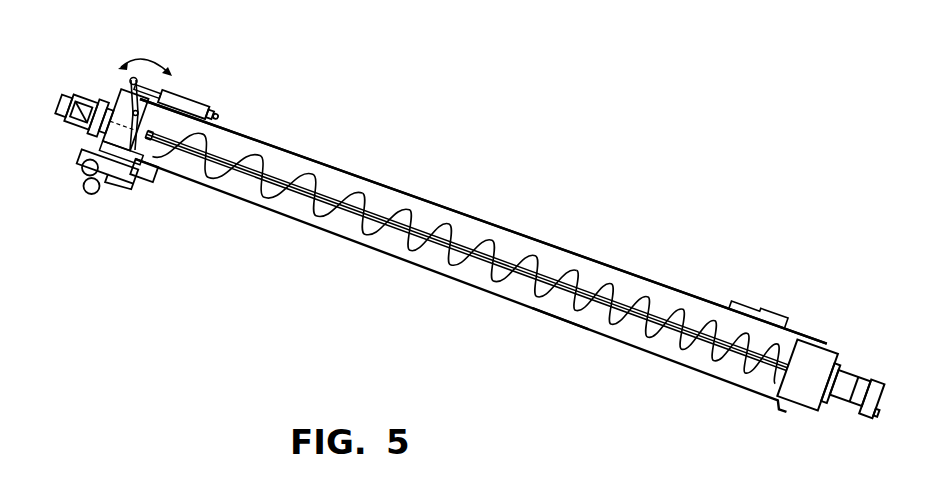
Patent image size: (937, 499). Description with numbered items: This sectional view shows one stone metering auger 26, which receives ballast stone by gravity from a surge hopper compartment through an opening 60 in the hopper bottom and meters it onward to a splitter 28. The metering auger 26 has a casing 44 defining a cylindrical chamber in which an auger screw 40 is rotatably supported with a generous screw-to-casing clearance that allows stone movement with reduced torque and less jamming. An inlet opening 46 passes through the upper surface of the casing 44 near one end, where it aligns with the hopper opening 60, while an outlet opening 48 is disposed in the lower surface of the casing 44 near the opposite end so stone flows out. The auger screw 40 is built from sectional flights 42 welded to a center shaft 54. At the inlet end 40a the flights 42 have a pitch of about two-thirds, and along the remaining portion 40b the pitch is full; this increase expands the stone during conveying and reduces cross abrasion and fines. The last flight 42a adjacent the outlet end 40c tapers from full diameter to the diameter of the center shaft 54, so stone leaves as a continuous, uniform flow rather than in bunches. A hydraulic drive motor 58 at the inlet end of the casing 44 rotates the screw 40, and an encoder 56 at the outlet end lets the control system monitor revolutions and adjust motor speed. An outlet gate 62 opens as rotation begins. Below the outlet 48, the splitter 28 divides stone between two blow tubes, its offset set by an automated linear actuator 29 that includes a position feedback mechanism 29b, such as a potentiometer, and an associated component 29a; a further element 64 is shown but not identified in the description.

The metering auger 26 is at (499, 200).
The splitter 28 is at (106, 187).
The automated linear actuator 29 is at (60, 213).
The upper roller 29a is at (82, 163).
The position feedback mechanism 29b is at (87, 194).
The auger screw 40 is at (470, 267).
The inlet end of the screw 40a is at (737, 372).
The remaining portion of the screw 40b is at (450, 250).
The outlet end of the screw 40c is at (228, 155).
The flights 42 is at (467, 288).
The last flight 42a is at (192, 167).
The casing 44 is at (567, 250).
The inlet opening 46 is at (780, 313).
The outlet opening 48 is at (150, 172).
The center shaft 54 is at (566, 302).
The encoder 56 is at (81, 85).
The drive motor 58 is at (833, 408).
The opening 60 is at (757, 307).
The outlet gate 62 is at (102, 135).
The actuator cylinder 64 is at (187, 86).